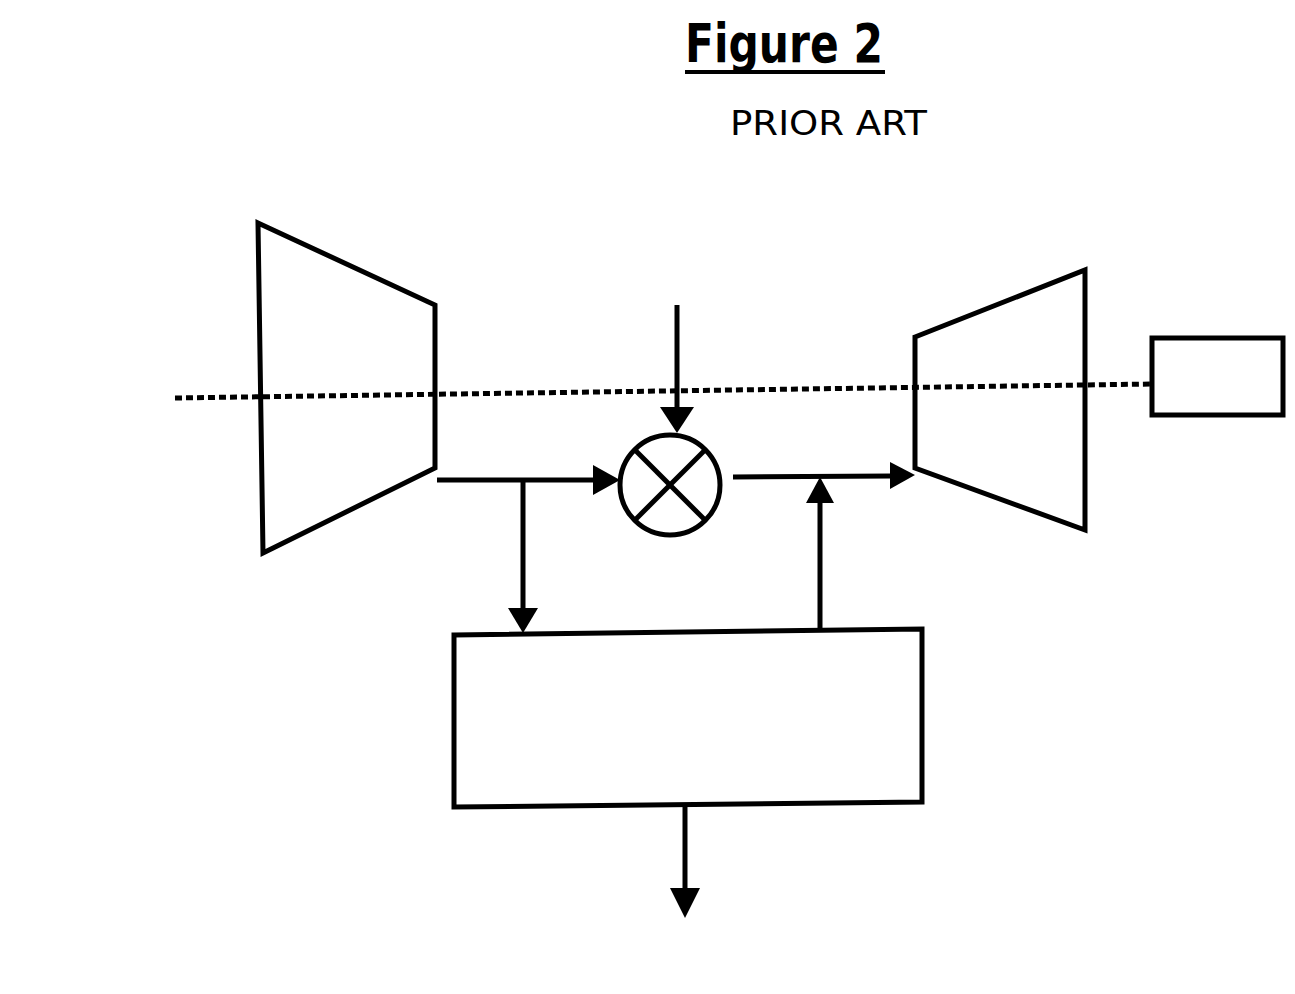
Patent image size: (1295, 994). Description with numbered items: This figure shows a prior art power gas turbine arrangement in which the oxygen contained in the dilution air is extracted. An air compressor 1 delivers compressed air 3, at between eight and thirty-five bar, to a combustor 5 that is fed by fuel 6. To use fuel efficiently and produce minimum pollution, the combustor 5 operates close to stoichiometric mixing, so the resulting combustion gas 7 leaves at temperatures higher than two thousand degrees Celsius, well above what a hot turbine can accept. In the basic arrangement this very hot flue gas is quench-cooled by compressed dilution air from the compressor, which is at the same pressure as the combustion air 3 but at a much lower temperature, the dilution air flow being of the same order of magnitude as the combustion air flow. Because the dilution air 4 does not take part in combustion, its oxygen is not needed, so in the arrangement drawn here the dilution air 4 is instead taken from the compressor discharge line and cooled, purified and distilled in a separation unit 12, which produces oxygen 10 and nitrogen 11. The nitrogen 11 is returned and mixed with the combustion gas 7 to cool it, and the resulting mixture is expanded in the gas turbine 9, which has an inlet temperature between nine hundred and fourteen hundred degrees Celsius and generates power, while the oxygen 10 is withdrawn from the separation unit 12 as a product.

The air compressor 1 is at (362, 308).
The air 3 is at (478, 497).
The dilution air 4 is at (525, 563).
The combustor 5 is at (692, 478).
The fuel 6 is at (682, 357).
The combustion gas 7 is at (824, 465).
The gas turbine 9 is at (1000, 358).
The oxygen 10 is at (670, 817).
The nitrogen 11 is at (820, 545).
The separation unit 12 is at (688, 718).